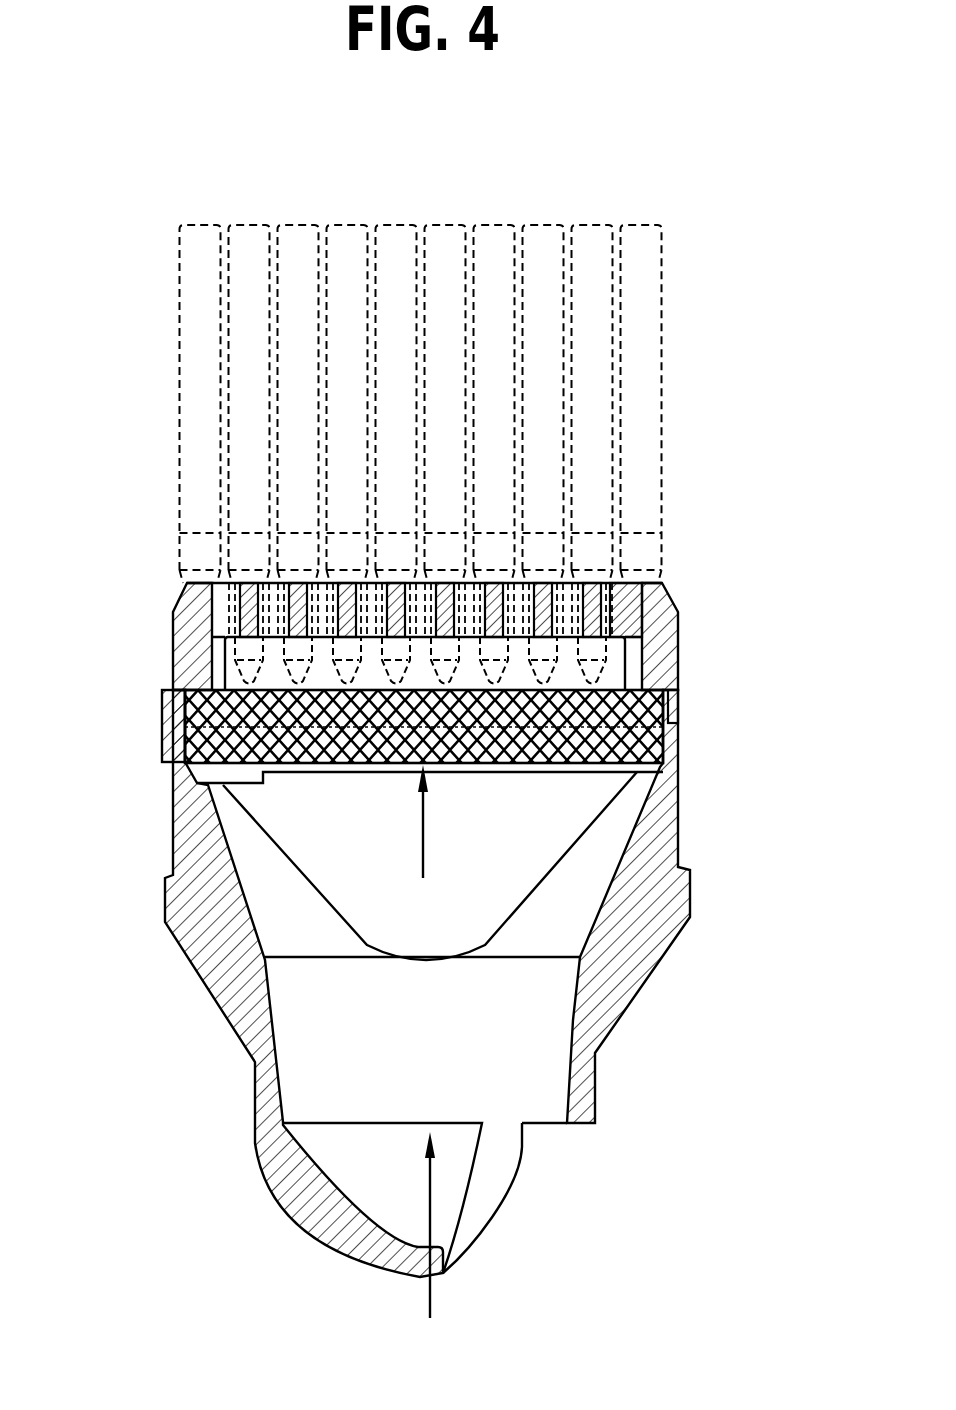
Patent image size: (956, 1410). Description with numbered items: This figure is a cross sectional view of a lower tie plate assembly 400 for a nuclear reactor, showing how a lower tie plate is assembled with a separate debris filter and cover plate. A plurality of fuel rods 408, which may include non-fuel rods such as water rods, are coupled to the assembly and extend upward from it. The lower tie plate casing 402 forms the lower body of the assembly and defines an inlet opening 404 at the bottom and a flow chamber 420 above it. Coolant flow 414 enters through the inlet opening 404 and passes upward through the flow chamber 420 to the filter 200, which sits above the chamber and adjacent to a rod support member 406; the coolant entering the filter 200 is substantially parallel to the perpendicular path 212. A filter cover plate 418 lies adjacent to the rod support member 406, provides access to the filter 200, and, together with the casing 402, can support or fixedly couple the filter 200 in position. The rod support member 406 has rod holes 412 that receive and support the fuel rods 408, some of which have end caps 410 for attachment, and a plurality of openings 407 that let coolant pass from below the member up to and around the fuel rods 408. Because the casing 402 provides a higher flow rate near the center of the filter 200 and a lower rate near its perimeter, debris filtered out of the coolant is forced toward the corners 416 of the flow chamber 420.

The lower tie plate assembly 400 is at (433, 170).
The fuel rods 408 is at (640, 332).
The rod holes 412 is at (233, 593).
The rod support member 406 is at (658, 620).
The openings 407 is at (622, 603).
The end caps 410 is at (248, 652).
The filter cover plate 418 is at (162, 740).
The filter 200 is at (668, 688).
The corners 416 is at (637, 767).
The lower tie plate casing 402 is at (683, 823).
The flow chamber 420 is at (600, 862).
The inlet opening 404 is at (547, 1113).
The perpendicular path 212 is at (420, 827).
The coolant flow 414 is at (433, 1297).